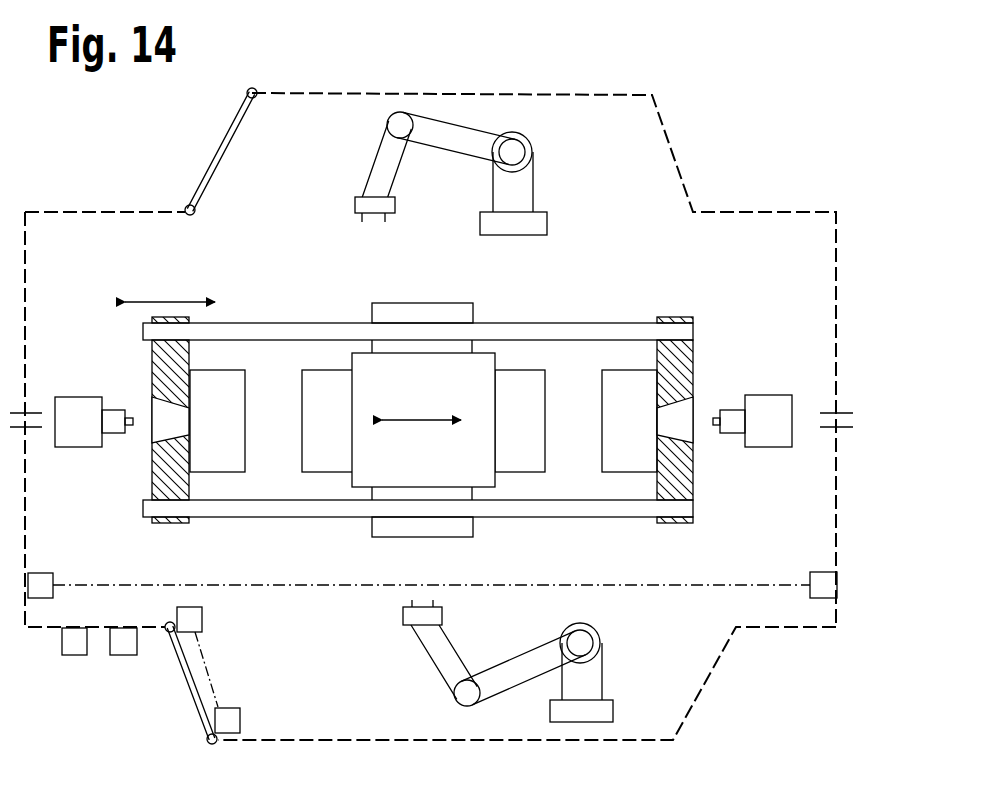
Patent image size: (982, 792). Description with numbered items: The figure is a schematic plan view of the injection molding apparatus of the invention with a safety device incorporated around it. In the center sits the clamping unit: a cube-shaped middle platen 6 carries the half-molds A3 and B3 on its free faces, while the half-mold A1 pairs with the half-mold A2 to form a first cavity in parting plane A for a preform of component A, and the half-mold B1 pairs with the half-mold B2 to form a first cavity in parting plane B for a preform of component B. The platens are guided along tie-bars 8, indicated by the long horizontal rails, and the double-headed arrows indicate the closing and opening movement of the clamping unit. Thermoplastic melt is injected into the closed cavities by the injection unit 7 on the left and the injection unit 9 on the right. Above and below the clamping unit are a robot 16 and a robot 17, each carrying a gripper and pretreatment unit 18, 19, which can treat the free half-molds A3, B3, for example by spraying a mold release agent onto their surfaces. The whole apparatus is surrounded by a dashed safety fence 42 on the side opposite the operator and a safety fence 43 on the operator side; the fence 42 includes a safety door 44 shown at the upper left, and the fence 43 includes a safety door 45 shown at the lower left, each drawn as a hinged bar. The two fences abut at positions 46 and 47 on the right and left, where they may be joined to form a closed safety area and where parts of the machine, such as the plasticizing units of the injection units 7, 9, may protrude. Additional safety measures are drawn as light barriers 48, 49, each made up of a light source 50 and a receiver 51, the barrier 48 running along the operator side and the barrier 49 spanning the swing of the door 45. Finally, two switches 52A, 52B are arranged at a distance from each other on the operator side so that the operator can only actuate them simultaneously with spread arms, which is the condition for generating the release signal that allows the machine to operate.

The middle platen 6 is at (372, 472).
The injection unit 7 is at (80, 435).
The tie-bars 8 is at (238, 507).
The injection unit 9 is at (773, 435).
The robot 16 is at (552, 187).
The robot 17 is at (614, 672).
The gripper and pretreatment unit 18 is at (355, 205).
The gripper and pretreatment unit 19 is at (408, 615).
The safety fence 42 is at (674, 145).
The safety fence 43 is at (783, 627).
The safety door 44 is at (213, 163).
The safety door 45 is at (192, 683).
The abutting position 46 is at (848, 428).
The abutting position 47 is at (30, 417).
The light barrier 48 is at (702, 583).
The light barrier 49 is at (205, 653).
The light source 50 is at (40, 583).
The receiver 51 is at (245, 720).
The switch 52A is at (72, 648).
The switch 52B is at (128, 648).
The half-mold A1 is at (217, 421).
The half-mold A2 is at (327, 421).
The half-mold A3 is at (378, 316).
The half-mold B1 is at (629, 421).
The half-mold B2 is at (520, 421).
The half-mold B3 is at (453, 528).